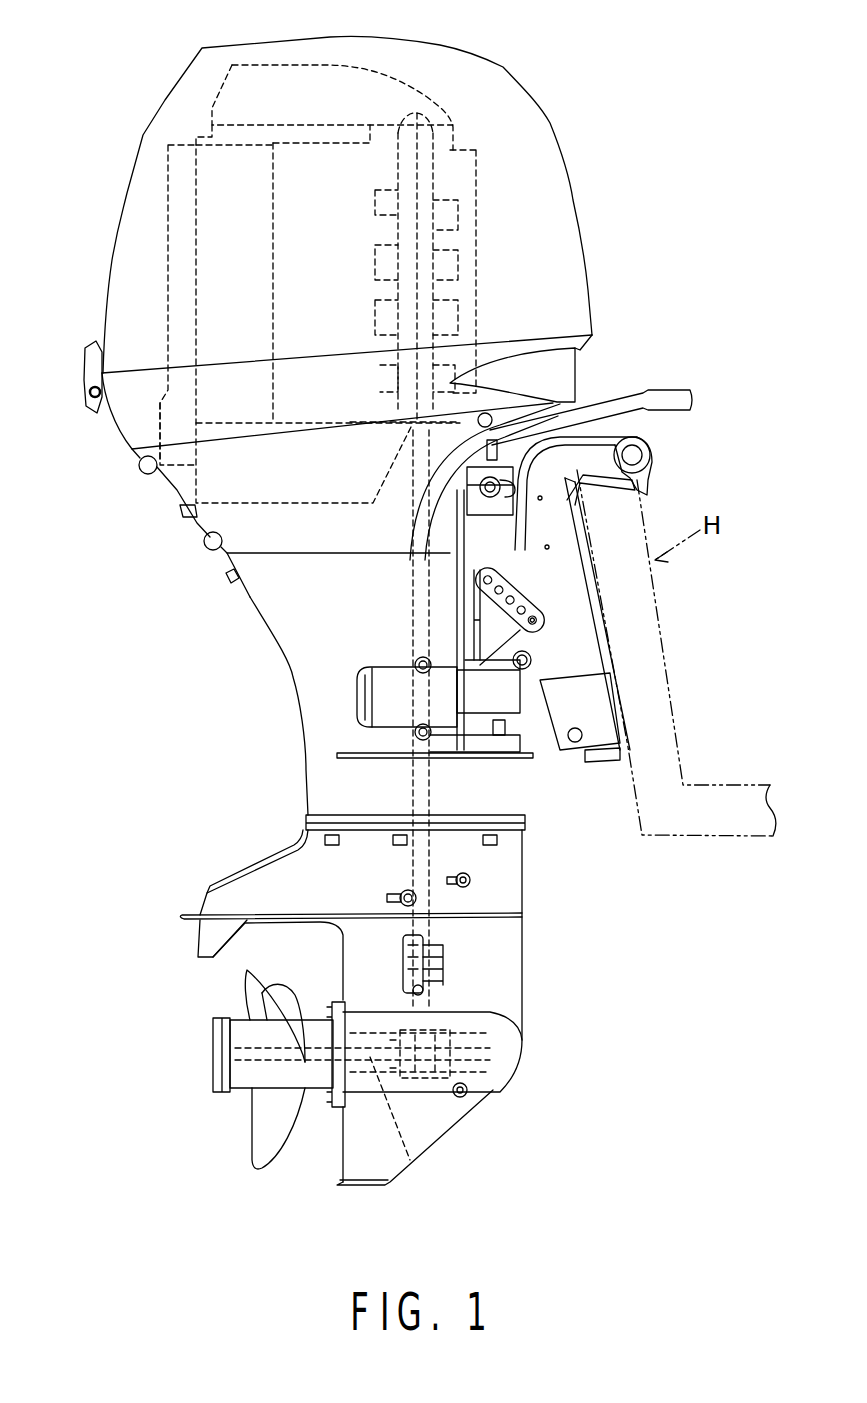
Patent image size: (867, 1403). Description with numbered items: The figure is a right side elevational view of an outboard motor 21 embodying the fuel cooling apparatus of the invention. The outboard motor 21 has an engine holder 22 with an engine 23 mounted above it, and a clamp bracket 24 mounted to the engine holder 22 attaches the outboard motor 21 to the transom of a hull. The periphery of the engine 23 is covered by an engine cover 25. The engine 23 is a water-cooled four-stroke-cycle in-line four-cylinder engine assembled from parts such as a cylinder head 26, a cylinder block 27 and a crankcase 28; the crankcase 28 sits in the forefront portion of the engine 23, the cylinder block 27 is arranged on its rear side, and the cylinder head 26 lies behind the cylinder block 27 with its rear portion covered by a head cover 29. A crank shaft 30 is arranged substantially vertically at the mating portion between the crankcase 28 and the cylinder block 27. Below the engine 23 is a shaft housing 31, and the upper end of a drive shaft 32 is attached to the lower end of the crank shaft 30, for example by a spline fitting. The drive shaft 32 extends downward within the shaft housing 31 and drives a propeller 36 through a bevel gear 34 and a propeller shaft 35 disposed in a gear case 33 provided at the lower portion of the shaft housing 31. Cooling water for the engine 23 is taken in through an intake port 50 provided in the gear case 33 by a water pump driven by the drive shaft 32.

The outboard motor 21 is at (572, 90).
The engine holder 22 is at (188, 488).
The engine 23 is at (487, 228).
The clamp bracket 24 is at (602, 637).
The engine cover 25 is at (143, 152).
The cylinder head 26 is at (207, 213).
The cylinder block 27 is at (203, 150).
The crankcase 28 is at (480, 290).
The head cover 29 is at (167, 270).
The crank shaft 30 is at (433, 173).
The shaft housing 31 is at (295, 675).
The drive shaft 32 is at (427, 790).
The gear case 33 is at (522, 963).
The bevel gear 34 is at (490, 1030).
The propeller shaft 35 is at (383, 1095).
The propeller 36 is at (258, 1170).
The intake port 50 is at (437, 947).